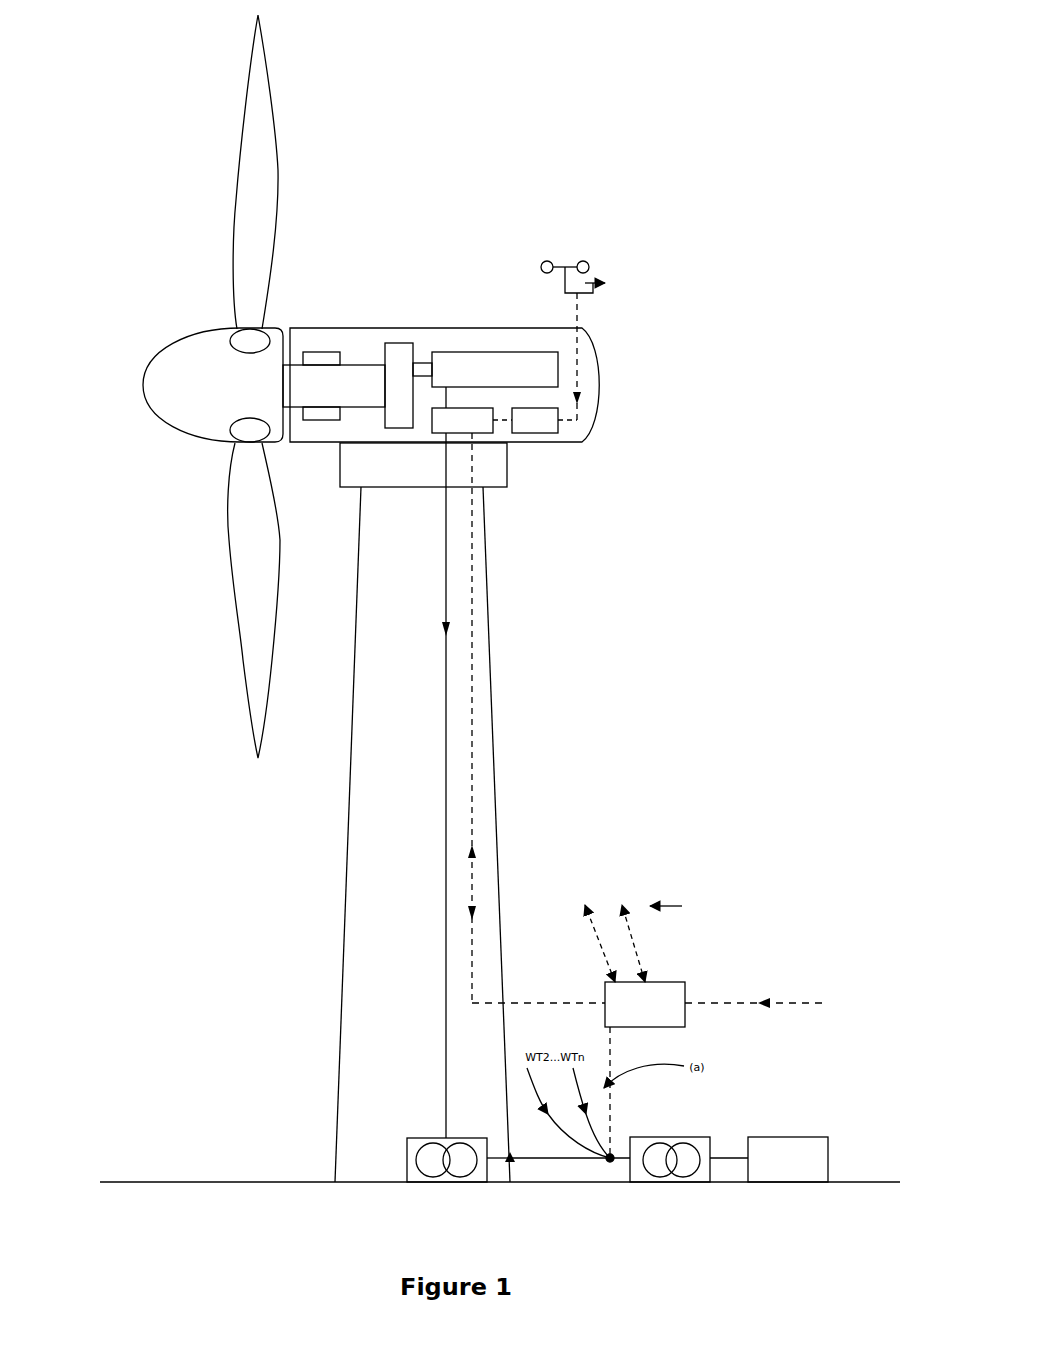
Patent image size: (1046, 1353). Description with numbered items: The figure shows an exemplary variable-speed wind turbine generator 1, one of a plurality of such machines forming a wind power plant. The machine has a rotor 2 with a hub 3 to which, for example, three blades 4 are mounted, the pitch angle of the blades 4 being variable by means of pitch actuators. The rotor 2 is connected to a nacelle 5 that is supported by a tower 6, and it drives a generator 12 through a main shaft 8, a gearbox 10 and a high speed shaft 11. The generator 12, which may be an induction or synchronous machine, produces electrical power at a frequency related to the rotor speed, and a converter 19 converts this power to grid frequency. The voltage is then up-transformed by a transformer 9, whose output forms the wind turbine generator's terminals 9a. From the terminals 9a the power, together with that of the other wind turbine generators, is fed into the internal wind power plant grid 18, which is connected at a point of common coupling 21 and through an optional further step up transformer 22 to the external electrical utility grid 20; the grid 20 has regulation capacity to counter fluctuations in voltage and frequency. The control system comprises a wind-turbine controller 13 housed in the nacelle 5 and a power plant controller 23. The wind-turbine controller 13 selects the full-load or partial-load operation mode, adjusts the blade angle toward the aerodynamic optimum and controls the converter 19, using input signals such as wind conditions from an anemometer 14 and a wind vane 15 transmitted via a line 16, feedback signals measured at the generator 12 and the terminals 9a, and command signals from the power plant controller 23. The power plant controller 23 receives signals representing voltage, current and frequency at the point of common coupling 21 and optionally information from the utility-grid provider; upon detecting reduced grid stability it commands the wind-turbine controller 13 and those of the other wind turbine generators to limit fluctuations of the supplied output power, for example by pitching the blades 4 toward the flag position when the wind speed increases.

The wind turbine generator 1 is at (437, 158).
The rotor 2 is at (141, 207).
The hub 3 is at (143, 392).
The blades 4 is at (272, 133).
The nacelle 5 is at (320, 328).
The tower 6 is at (344, 928).
The main shaft 8 is at (357, 360).
The transformer 9 is at (418, 1138).
The terminals 9a is at (511, 1163).
The gearbox 10 is at (395, 343).
The high speed shaft 11 is at (422, 362).
The generator 12 is at (493, 352).
The wind-turbine controller 13 is at (562, 432).
The anemometer 14 is at (583, 261).
The wind vane 15 is at (614, 270).
The line 16 is at (578, 360).
The wind power plant grid 18 is at (568, 1160).
The converter 19 is at (432, 433).
The electrical utility grid 20 is at (800, 1183).
The point of common coupling 21 is at (612, 1163).
The step up transformer 22 is at (700, 1174).
The power plant controller 23 is at (670, 982).